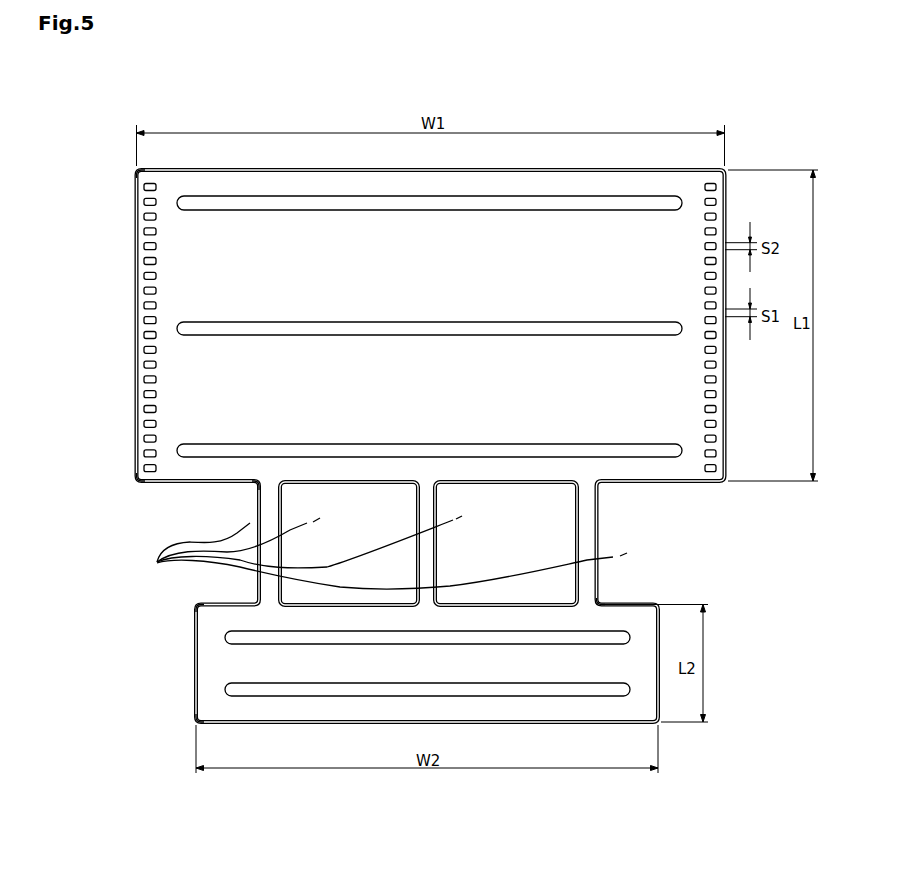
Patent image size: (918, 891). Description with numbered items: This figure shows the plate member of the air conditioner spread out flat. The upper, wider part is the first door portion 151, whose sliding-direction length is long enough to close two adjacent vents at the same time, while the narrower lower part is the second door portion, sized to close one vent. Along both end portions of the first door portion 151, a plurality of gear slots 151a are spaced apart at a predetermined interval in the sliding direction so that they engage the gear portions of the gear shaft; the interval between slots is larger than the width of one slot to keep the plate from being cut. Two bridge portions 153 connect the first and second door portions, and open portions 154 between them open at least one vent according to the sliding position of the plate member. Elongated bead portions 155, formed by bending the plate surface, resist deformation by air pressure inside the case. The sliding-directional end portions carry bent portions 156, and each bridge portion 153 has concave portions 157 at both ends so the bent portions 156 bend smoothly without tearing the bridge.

The first door portion 151 is at (190, 280).
The gear slots 151a is at (143, 230).
The bridge portions 153 is at (587, 536).
The open portions 154 is at (382, 552).
The bead portions 155 is at (210, 446).
The bent portions 156 is at (137, 171).
The concave portions 157 is at (257, 486).